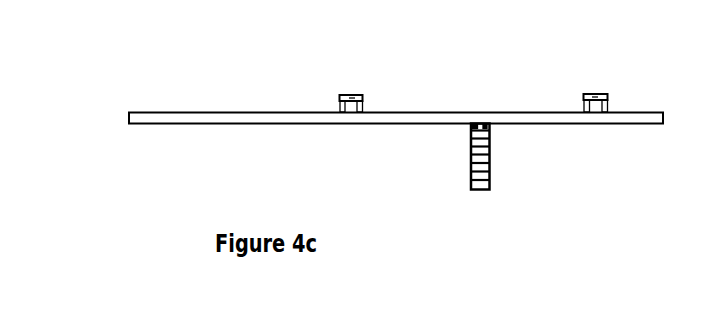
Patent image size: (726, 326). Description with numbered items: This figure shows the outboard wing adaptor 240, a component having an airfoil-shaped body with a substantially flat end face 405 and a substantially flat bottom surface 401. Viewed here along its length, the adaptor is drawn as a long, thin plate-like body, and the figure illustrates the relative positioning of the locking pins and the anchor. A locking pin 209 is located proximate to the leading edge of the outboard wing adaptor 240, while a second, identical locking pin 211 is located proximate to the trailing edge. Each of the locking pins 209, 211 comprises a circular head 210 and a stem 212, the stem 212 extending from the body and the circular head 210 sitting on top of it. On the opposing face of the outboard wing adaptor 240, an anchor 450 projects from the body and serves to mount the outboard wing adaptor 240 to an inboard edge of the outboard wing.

The outboard wing adaptor 240 is at (103, 160).
The bottom surface 401 is at (612, 117).
The end face 405 is at (435, 118).
The anchor 450 is at (488, 162).
The circular head 210 is at (360, 97).
The locking pin 211 is at (351, 96).
The locking pin 209 is at (595, 93).
The stem 212 is at (363, 107).